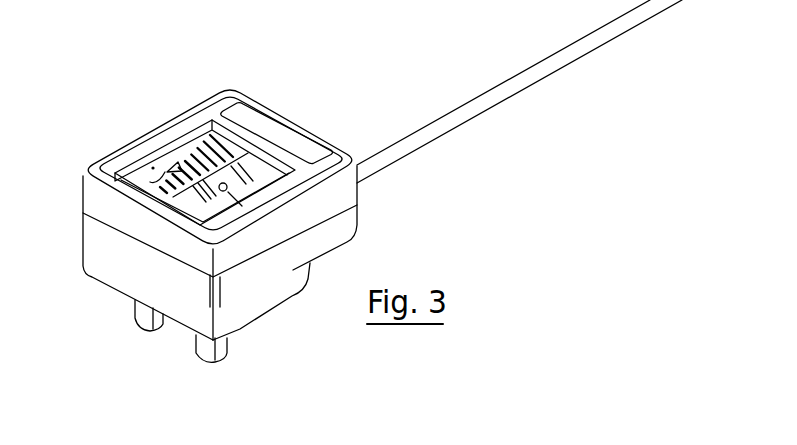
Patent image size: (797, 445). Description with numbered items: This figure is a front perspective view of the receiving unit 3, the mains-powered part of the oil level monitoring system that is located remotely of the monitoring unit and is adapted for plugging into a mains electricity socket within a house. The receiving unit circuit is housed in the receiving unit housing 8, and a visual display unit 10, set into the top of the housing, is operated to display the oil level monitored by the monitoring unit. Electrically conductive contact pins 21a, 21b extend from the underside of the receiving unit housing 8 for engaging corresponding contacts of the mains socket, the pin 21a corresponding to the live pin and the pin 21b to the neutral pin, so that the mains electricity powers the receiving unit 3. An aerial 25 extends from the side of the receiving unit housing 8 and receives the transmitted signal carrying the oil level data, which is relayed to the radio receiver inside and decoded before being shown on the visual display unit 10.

The receiving unit 3 is at (72, 115).
The receiving unit housing 8 is at (351, 222).
The visual display unit 10 is at (187, 160).
The contact pin 21a is at (196, 345).
The contact pin 21b is at (135, 308).
The aerial 25 is at (552, 68).